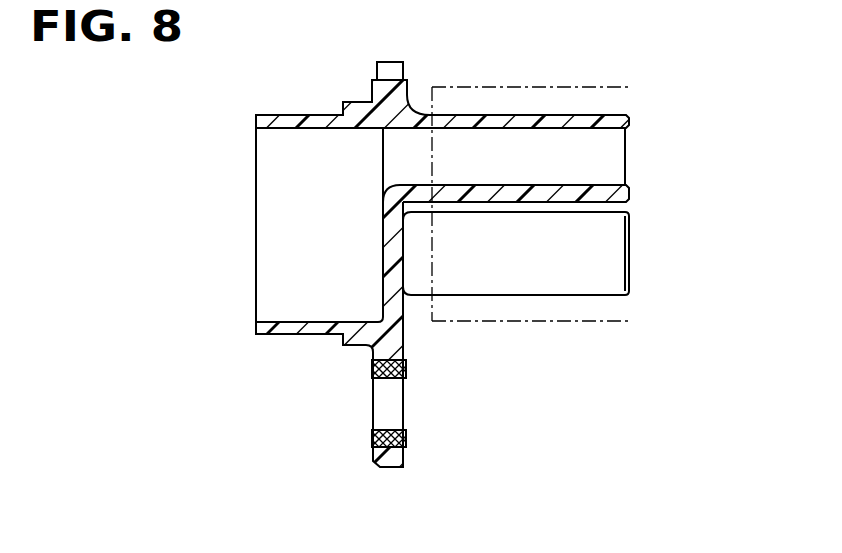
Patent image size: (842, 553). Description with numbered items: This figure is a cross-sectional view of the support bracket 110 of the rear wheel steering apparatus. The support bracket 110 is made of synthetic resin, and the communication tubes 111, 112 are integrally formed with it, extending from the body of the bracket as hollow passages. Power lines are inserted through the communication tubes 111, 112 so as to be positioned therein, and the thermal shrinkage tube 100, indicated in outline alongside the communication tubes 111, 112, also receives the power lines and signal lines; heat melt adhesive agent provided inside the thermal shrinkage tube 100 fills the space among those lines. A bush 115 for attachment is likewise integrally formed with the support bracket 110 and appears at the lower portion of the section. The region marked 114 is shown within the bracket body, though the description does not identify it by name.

The thermal shrinkage tube 100 is at (470, 87).
The support bracket 110 is at (318, 113).
The communication tube 111 is at (577, 128).
The communication tube 112 is at (542, 280).
The housing cavity 114 is at (295, 130).
The bush 115 is at (385, 440).